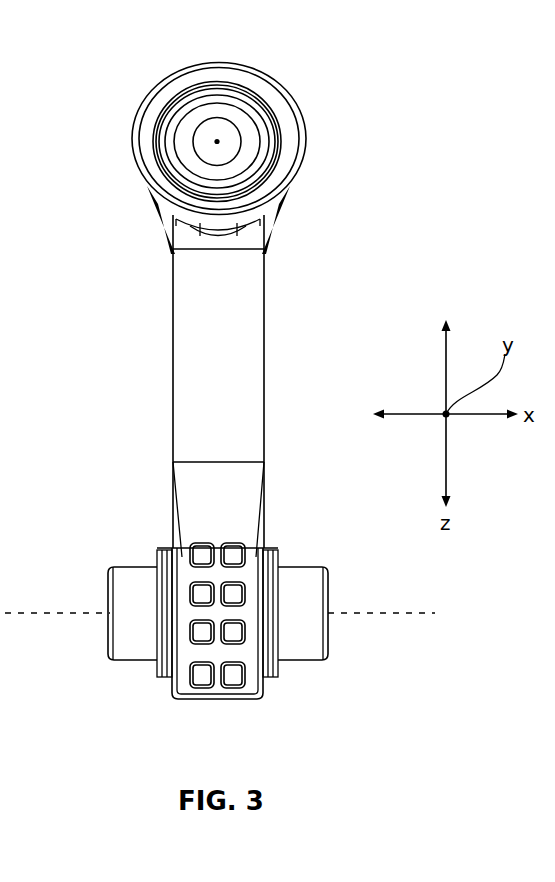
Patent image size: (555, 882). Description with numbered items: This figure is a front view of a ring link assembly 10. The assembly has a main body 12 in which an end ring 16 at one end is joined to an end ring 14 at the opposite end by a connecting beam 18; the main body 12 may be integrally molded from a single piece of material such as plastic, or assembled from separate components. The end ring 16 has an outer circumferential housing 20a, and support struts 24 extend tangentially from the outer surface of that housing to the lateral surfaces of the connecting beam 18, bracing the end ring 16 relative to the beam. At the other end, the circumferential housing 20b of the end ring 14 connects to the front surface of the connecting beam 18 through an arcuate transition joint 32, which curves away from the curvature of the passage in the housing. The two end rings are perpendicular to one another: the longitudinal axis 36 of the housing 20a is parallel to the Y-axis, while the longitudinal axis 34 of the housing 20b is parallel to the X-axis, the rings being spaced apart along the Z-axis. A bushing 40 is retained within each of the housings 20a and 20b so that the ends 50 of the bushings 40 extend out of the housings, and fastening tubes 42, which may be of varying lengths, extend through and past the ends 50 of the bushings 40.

The ring link assembly 10 is at (402, 140).
The main body 12 is at (282, 344).
The end ring 14 is at (172, 695).
The end ring 16 is at (262, 75).
The connecting beam 18 is at (243, 318).
The outer circumferential housing 20a is at (247, 65).
The circumferential housing 20b is at (244, 700).
The support struts 24 is at (157, 220).
The arcuate transition joint 32 is at (240, 507).
The longitudinal axis 34 is at (380, 613).
The longitudinal axis 36 is at (218, 142).
The bushing 40 is at (202, 92).
The fastening tube 42 is at (182, 123).
The ends of the bushings 50 is at (187, 83).